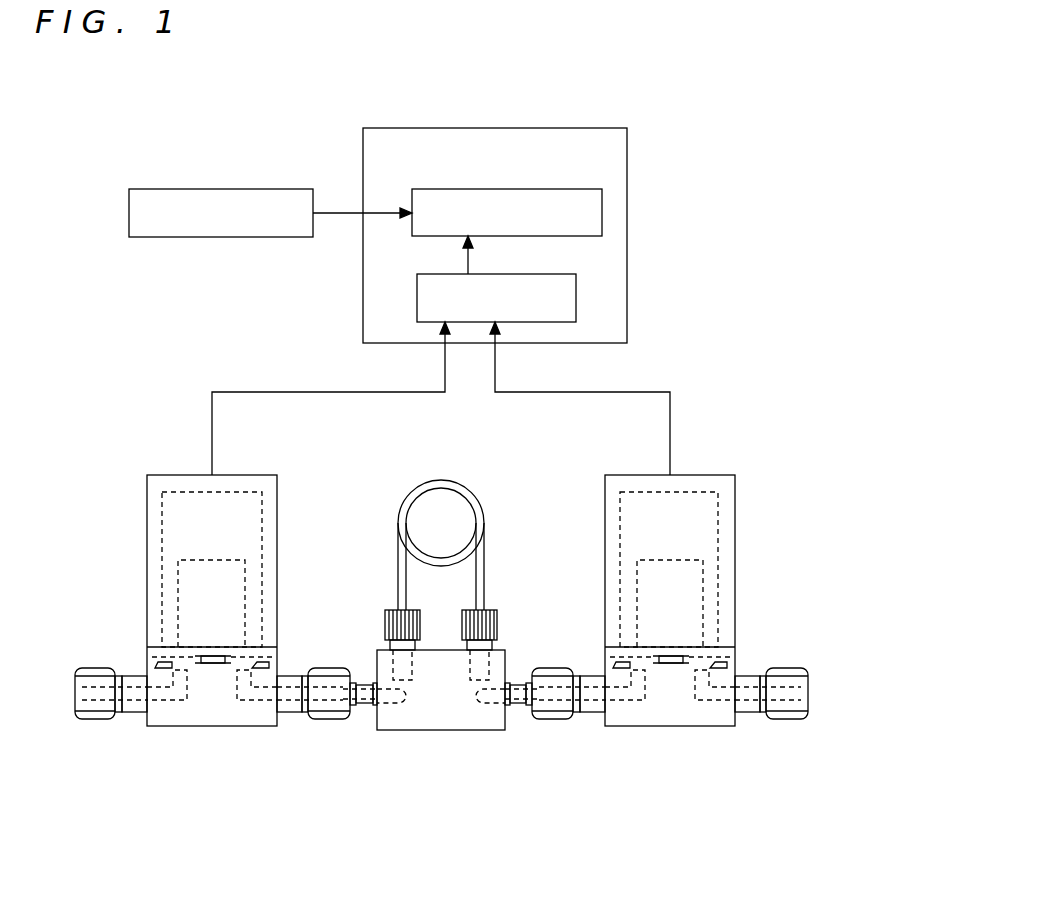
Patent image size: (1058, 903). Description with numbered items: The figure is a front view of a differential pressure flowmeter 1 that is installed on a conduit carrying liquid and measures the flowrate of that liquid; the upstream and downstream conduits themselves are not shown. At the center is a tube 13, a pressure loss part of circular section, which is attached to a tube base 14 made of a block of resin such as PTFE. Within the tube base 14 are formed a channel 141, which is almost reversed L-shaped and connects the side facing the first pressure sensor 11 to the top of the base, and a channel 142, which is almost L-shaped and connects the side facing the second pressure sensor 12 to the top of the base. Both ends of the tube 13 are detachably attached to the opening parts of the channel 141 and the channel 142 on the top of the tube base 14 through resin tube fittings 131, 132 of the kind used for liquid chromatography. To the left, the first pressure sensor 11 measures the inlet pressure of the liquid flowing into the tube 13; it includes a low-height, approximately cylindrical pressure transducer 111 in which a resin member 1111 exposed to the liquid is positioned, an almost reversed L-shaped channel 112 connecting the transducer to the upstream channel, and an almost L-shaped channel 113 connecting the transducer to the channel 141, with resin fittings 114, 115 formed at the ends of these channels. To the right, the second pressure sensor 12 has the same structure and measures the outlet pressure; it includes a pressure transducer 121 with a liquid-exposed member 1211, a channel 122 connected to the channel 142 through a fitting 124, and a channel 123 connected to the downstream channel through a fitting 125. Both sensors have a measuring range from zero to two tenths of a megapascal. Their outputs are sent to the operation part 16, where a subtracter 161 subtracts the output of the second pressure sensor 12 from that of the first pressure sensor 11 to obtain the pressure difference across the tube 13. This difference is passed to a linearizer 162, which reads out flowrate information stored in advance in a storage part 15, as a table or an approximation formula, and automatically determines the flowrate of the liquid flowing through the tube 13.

The differential pressure flowmeter 1 is at (127, 117).
The first pressure sensor 11 is at (147, 530).
The pressure transducer 111 is at (213, 672).
The channel 112 is at (172, 731).
The channel 113 is at (270, 731).
The fitting 114 is at (108, 720).
The fitting 115 is at (328, 720).
The member 1111 is at (148, 603).
The second pressure sensor 12 is at (735, 530).
The pressure transducer 121 is at (673, 672).
The channel 122 is at (632, 731).
The channel 123 is at (730, 731).
The fitting 124 is at (555, 720).
The fitting 125 is at (792, 720).
The member 1211 is at (731, 603).
The tube 13 is at (441, 481).
The tube fitting 131 is at (385, 623).
The tube fitting 132 is at (497, 623).
The tube base 14 is at (441, 730).
The channel 141 is at (390, 706).
The channel 142 is at (495, 706).
The storage part 15 is at (129, 213).
The operation part 16 is at (627, 158).
The subtracter 161 is at (576, 303).
The linearizer 162 is at (602, 228).